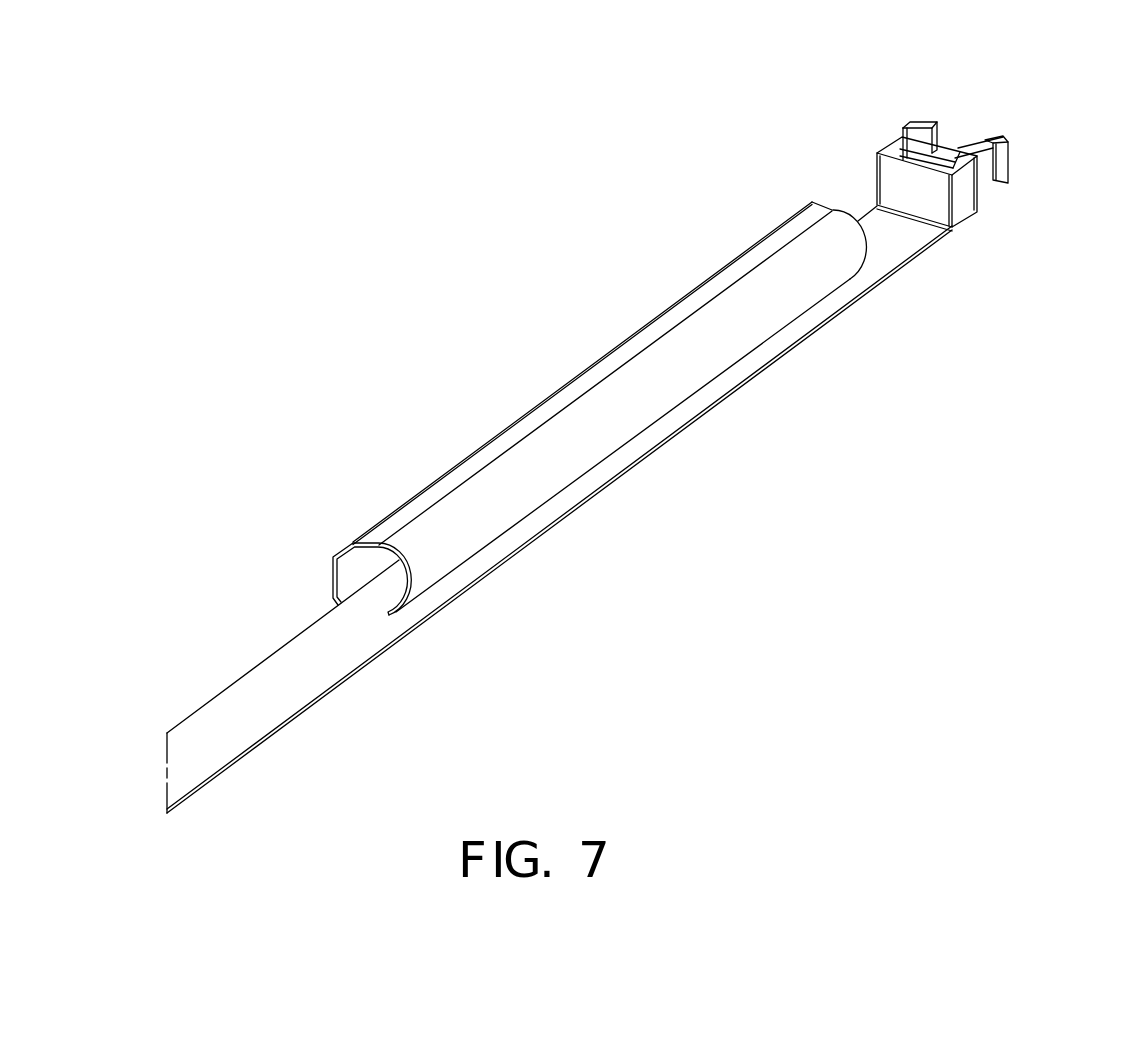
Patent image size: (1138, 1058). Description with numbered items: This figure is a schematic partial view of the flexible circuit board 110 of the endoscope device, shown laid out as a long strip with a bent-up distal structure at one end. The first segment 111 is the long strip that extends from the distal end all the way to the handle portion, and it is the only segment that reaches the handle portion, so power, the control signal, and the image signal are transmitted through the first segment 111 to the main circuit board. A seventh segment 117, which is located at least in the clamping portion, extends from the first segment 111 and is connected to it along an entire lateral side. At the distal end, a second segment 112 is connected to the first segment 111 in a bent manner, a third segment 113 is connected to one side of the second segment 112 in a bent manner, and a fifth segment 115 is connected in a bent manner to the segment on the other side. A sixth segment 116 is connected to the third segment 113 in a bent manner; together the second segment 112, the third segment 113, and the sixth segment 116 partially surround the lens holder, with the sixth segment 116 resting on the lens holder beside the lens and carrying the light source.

The flexible circuit board 110 is at (636, 438).
The first segment 111 is at (900, 247).
The second segment 112 is at (955, 159).
The third segment 113 is at (903, 139).
The fifth segment 115 is at (943, 148).
The sixth segment 116 is at (1010, 163).
The seventh segment 117 is at (398, 518).